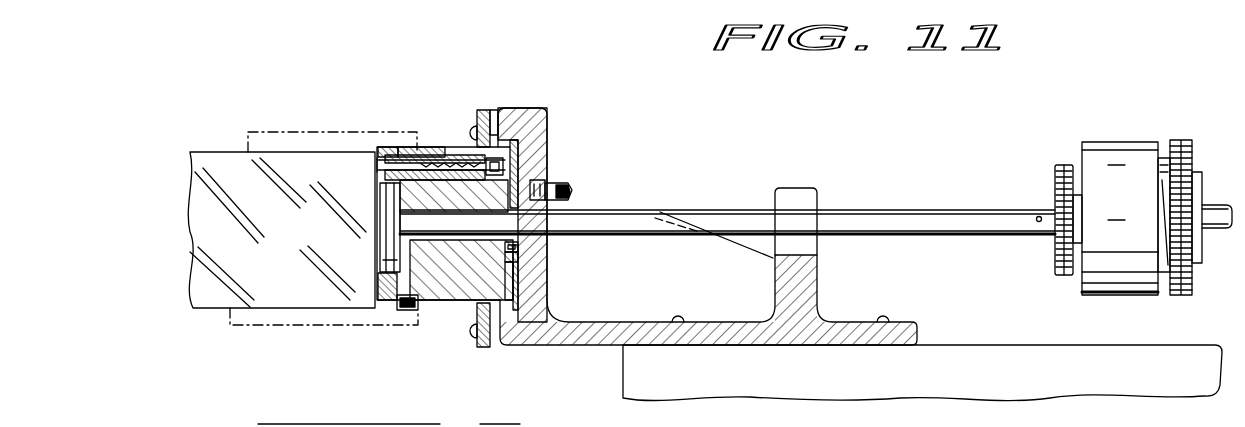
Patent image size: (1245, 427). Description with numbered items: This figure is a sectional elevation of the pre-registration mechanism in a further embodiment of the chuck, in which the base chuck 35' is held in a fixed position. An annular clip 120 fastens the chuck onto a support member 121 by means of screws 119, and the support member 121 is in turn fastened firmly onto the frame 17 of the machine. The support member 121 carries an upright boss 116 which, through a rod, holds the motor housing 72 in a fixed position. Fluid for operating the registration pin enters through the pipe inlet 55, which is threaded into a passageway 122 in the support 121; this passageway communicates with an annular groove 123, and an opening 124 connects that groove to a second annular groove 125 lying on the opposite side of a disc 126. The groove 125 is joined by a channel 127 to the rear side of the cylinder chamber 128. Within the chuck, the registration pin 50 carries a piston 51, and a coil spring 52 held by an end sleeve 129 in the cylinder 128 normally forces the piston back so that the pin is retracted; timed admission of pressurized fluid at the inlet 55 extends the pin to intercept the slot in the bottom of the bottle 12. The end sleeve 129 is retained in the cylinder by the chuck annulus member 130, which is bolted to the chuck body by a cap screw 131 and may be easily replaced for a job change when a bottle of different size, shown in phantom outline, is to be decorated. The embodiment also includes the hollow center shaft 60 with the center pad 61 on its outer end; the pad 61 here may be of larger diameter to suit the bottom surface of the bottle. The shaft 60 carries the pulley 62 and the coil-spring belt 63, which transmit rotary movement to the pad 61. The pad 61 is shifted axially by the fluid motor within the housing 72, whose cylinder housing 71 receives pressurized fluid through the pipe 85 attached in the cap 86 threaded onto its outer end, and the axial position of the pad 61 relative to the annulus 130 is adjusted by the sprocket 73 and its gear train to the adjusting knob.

The bottle 12 is at (200, 240).
The supporting frame 17 is at (995, 348).
The base chuck 35' is at (445, 267).
The registration pin 50 is at (406, 148).
The piston 51 is at (516, 143).
The coil spring 52 is at (446, 158).
The pipe inlet 55 is at (660, 212).
The hollow shaft 60 is at (735, 208).
The center pad 61 is at (388, 238).
The pulley 62 is at (1058, 178).
The coil-spring belt 63 is at (1065, 166).
The cylinder housing 71 is at (1163, 160).
The motor housing 72 is at (1113, 152).
The sprocket 73 is at (1192, 150).
The pipe 85 is at (1215, 218).
The cap 86 is at (1198, 243).
The upright boss 116 is at (840, 160).
The screw 119 is at (471, 122).
The annular clip 120 is at (493, 110).
The support member 121 is at (535, 112).
The passageway 122 is at (558, 194).
The annular groove 123 is at (518, 246).
The opening 124 is at (518, 256).
The annular groove 125 is at (518, 268).
The disc 126 is at (520, 298).
The channel 127 is at (540, 187).
The cylinder chamber 128 is at (505, 165).
The end sleeve 129 is at (387, 150).
The chuck annulus member 130 is at (382, 304).
The cap screw 131 is at (402, 310).